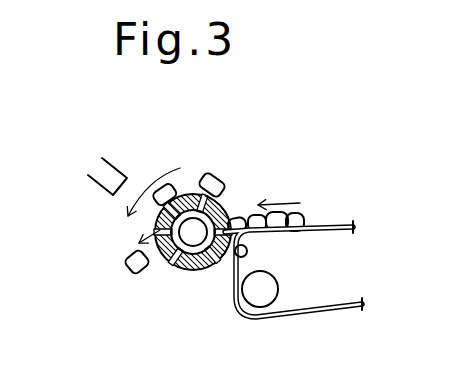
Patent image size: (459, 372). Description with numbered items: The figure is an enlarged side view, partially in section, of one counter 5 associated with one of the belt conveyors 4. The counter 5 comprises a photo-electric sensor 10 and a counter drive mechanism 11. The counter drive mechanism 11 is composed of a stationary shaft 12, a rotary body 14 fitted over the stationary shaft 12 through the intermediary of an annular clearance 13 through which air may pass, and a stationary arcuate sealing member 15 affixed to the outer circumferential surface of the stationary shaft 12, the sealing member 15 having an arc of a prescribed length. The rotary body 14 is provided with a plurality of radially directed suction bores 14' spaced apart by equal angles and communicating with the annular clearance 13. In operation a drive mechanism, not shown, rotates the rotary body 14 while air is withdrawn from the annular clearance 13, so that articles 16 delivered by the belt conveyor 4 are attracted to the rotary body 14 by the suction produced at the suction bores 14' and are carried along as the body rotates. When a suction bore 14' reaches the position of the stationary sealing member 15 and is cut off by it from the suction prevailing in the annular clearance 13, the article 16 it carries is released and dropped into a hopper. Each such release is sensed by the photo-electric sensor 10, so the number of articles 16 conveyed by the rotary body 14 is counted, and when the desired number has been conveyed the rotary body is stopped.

The belt conveyor 4 is at (367, 220).
The counter 5 is at (254, 145).
The photo-electric sensor 10 is at (98, 168).
The counter drive mechanism 11 is at (198, 280).
The stationary shaft 12 is at (193, 230).
The annular clearance 13 is at (223, 217).
The rotary body 14 is at (161, 287).
The suction bores 14' is at (229, 294).
The stationary arcuate sealing member 15 is at (192, 270).
The articles 16 is at (222, 198).